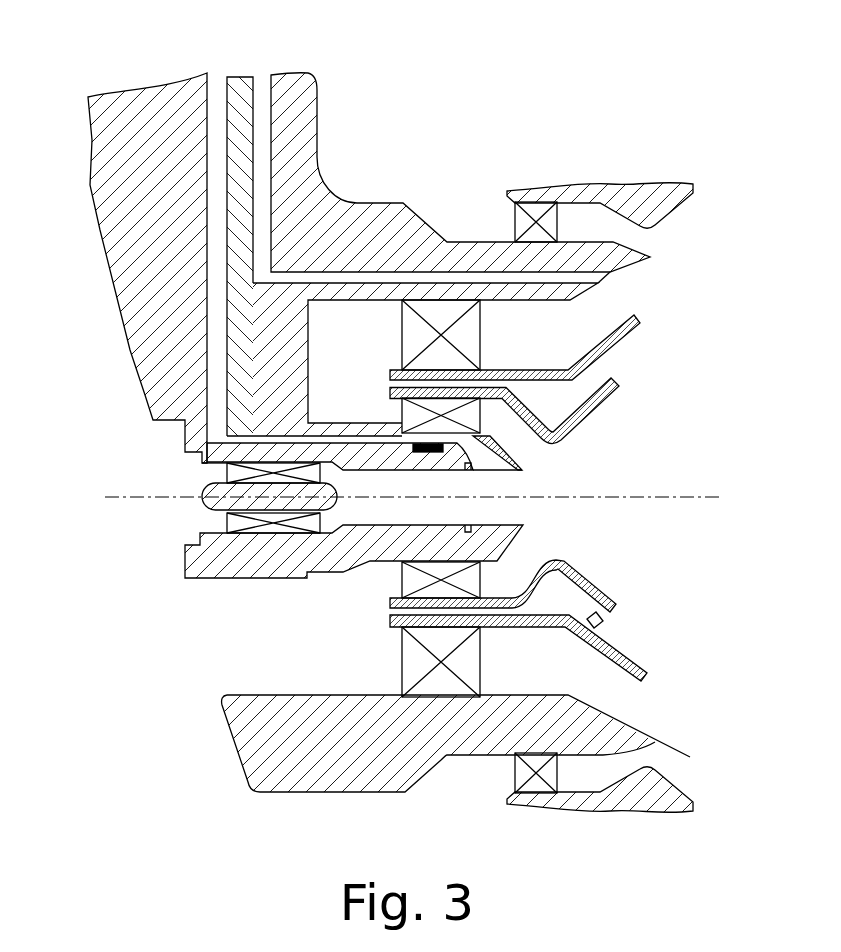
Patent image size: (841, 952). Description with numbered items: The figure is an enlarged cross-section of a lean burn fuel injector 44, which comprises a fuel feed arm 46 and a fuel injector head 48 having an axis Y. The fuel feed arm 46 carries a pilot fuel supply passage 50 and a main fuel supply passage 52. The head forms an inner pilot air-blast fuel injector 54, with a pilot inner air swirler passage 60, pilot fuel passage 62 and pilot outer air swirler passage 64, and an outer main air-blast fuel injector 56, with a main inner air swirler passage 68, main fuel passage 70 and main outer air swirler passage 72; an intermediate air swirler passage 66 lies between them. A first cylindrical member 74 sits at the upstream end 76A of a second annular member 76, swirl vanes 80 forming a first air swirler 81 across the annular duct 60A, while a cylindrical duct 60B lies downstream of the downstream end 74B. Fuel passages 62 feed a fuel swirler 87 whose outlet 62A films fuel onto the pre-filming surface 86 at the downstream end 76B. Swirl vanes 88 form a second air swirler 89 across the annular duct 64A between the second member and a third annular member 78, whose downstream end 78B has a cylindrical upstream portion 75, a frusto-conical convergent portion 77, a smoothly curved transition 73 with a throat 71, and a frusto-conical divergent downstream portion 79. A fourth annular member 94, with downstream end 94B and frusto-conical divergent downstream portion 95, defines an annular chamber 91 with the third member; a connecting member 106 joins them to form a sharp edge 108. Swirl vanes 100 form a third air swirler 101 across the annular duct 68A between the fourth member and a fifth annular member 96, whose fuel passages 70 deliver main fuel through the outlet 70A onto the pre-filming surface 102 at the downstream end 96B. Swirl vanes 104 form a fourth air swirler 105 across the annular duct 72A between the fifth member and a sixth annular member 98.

The lean burn fuel injector 44 is at (633, 76).
The fuel feed arm 46 is at (300, 103).
The fuel injector head 48 is at (596, 158).
The pilot fuel supply passage 50 is at (222, 118).
The main fuel supply passage 52 is at (260, 107).
The inner pilot air-blast fuel injector 54 is at (222, 580).
The outer main air-blast fuel injector 56 is at (678, 247).
The pilot inner air swirler passage 60 is at (360, 511).
The annular duct 60A is at (166, 513).
The cylindrical duct 60B is at (465, 511).
The pilot fuel passage 62 is at (330, 421).
The outlet 62A is at (482, 473).
The pilot outer air swirler passage 64 is at (516, 425).
The annular duct 64A is at (483, 578).
The intermediate air swirler passage 66 is at (400, 662).
The main inner air swirler passage 68 is at (541, 345).
The annular duct 68A is at (580, 694).
The main fuel passage 70 is at (360, 282).
The outlet 70A is at (600, 275).
The throat 71 is at (535, 472).
The main outer air swirler passage 72 is at (603, 236).
The annular duct 72A is at (575, 784).
The smoothly curved transition 73 is at (556, 445).
The first generally cylindrical member 74 is at (225, 525).
The downstream end 74B is at (183, 452).
The cylindrical upstream portion 75 is at (403, 368).
The second generally annular member 76 is at (285, 578).
The upstream end 76A is at (233, 571).
The downstream end 76B is at (560, 563).
The frusto-conical convergent portion 77 is at (506, 448).
The third generally annular member 78 is at (455, 600).
The downstream end 78B is at (614, 387).
The frusto-conical divergent downstream portion 79 is at (606, 405).
The swirl vanes 80 is at (235, 467).
The first air swirler 81 is at (205, 512).
The pre-filming surface 86 is at (505, 520).
The fuel swirler 87 is at (410, 445).
The swirl vanes 88 is at (363, 605).
The second air swirler 89 is at (390, 621).
The annular chamber 91 is at (571, 411).
The fourth generally annular member 94 is at (583, 357).
The downstream end 94B is at (642, 322).
The frusto-conical divergent downstream portion 95 is at (640, 318).
The fifth generally annular member 96 is at (337, 775).
The downstream end 96B is at (560, 757).
The sixth generally annular member 98 is at (650, 813).
The swirl vanes 100 is at (462, 655).
The third air swirler 101 is at (380, 665).
The pre-filming surface 102 is at (608, 716).
The swirl vanes 104 is at (512, 202).
The fourth air swirler 105 is at (502, 226).
The connecting member 106 is at (602, 624).
The sharp edge 108 is at (617, 607).
The axis Y is at (104, 490).